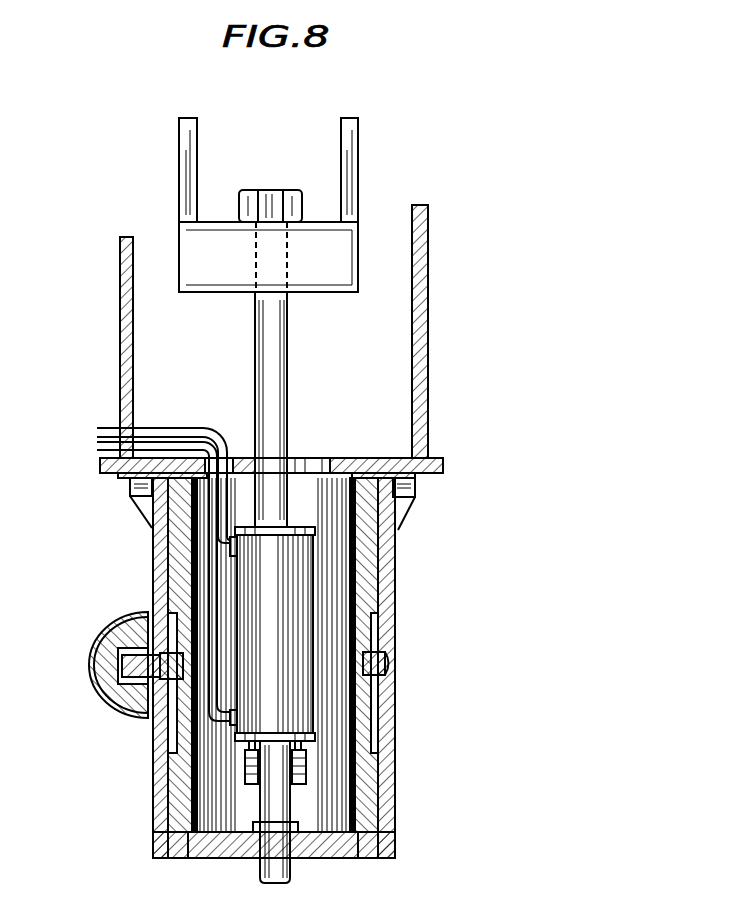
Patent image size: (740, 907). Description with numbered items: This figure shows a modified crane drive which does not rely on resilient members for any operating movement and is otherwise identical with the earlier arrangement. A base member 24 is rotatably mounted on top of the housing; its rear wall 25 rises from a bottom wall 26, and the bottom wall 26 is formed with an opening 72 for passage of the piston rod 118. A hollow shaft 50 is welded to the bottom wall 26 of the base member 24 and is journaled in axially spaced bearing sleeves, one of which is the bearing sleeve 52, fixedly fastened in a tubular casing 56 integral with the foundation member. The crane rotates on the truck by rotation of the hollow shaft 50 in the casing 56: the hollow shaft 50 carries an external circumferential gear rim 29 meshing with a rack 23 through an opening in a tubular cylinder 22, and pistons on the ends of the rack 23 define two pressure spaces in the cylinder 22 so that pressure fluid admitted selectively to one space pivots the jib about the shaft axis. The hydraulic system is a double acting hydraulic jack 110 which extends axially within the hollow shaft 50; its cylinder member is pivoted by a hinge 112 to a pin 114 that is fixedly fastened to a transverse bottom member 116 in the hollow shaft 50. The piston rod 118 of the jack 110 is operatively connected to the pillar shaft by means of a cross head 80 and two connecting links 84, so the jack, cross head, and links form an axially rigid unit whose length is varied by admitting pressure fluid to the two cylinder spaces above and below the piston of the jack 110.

The connecting links 84 is at (348, 152).
The cross head 80 is at (328, 275).
The piston rod 118 is at (263, 348).
The base member 24 is at (440, 296).
The rear wall 25 is at (422, 371).
The opening 72 is at (318, 462).
The bottom wall 26 is at (107, 477).
The hollow shaft 50 is at (182, 548).
The bearing sleeve 52 is at (377, 551).
The tubular casing 56 is at (388, 598).
The tubular cylinder 22 is at (106, 673).
The rack 23 is at (107, 706).
The external circumferential gear rim 29 is at (213, 664).
The double acting hydraulic jack 110 is at (299, 527).
The hinge 112 is at (307, 760).
The pin 114 is at (255, 845).
The transverse bottom member 116 is at (332, 848).